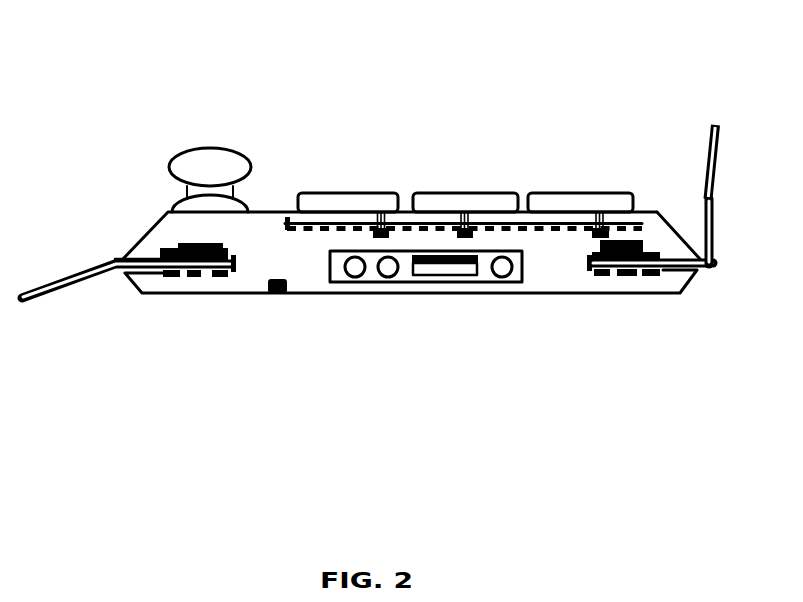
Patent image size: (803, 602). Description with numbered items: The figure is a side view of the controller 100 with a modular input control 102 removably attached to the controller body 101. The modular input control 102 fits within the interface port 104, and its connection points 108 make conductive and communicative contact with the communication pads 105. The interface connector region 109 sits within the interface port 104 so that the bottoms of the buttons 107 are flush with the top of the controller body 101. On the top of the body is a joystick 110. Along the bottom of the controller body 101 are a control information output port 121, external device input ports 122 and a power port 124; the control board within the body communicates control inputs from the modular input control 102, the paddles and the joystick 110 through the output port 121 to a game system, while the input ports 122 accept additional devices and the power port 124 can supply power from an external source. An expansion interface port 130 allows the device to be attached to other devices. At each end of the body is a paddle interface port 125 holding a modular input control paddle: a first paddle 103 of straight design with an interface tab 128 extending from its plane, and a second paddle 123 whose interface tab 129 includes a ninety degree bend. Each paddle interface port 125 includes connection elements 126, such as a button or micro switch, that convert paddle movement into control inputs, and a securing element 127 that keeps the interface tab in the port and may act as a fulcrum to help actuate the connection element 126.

The controller 100 is at (292, 94).
The controller body 101 is at (152, 224).
The modular input control 102 is at (643, 210).
The first modular input control paddle 103 is at (50, 281).
The interface port 104 is at (282, 223).
The communication pads 105 is at (369, 234).
The buttons 107 is at (380, 189).
The connection points 108 is at (312, 220).
The interface connector region 109 is at (306, 214).
The joystick 110 is at (199, 147).
The control information output port 121 is at (448, 281).
The external device input ports 122 is at (388, 283).
The second modular input control paddle 123 is at (714, 122).
The power port 124 is at (505, 278).
The paddle interface port 125 is at (193, 281).
The connection elements 126 is at (216, 244).
The securing element 127 is at (163, 279).
The interface tab 128 is at (118, 257).
The interface tab 129 is at (717, 231).
The expansion interface port 130 is at (281, 296).